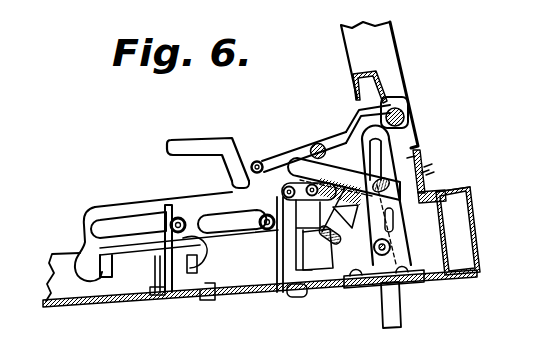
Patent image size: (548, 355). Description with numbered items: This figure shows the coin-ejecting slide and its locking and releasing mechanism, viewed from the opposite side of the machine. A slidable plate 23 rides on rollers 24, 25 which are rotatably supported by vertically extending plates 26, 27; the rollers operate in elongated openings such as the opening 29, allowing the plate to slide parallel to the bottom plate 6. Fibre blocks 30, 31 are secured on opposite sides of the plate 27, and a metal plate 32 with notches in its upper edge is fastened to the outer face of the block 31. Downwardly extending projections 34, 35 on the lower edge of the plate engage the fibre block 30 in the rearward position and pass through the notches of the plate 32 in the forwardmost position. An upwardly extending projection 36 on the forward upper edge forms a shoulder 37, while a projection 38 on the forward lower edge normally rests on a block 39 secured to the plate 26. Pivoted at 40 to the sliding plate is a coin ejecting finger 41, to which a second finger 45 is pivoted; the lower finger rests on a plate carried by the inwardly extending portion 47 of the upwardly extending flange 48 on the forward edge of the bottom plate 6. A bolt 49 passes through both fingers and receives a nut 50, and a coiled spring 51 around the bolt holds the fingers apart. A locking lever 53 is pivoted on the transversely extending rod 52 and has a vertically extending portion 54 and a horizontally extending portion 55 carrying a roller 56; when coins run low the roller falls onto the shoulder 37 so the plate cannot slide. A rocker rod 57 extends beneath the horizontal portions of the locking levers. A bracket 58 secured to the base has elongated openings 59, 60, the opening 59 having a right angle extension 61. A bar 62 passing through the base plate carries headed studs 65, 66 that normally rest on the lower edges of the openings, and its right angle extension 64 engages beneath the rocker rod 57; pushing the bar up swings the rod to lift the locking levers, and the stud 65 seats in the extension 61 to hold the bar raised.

The bottom plate 6 is at (437, 278).
The slidable plate 23 is at (115, 208).
The roller 24 is at (248, 247).
The roller 25 is at (198, 252).
The vertically extending plate 26 is at (284, 292).
The vertically extending plate 27 is at (168, 207).
The elongated opening 29 is at (110, 228).
The fibre block 30 is at (200, 295).
The fibre block 31 is at (163, 295).
The metal plate 32 is at (143, 303).
The downwardly extending projection 34 is at (207, 288).
The downwardly extending projection 35 is at (98, 272).
The upwardly extending projection 36 is at (200, 142).
The shoulder 37 is at (241, 181).
The projection 38 is at (293, 248).
The block 39 is at (309, 288).
The pivot 40 is at (304, 177).
The coin ejecting finger 41 is at (424, 167).
The second finger 45 is at (421, 180).
The inwardly extending portion 47 is at (467, 190).
The upwardly extending flange 48 is at (477, 227).
The bolt 49 is at (344, 181).
The nut 50 is at (338, 236).
The coiled spring 51 is at (318, 204).
The transversely extending rod 52 is at (396, 110).
The locking lever 53 is at (387, 95).
The vertically extending portion 54 is at (405, 114).
The horizontally extending portion 55 is at (274, 143).
The roller 56 is at (227, 217).
The rocker rod 57 is at (321, 141).
The bracket 58 is at (400, 235).
The elongated opening 59 is at (400, 222).
The elongated opening 60 is at (408, 158).
The right angle extension 61 is at (430, 190).
The bar 62 is at (392, 307).
The right angle extension 64 is at (334, 133).
The headed stud 65 is at (400, 250).
The headed stud 66 is at (421, 173).